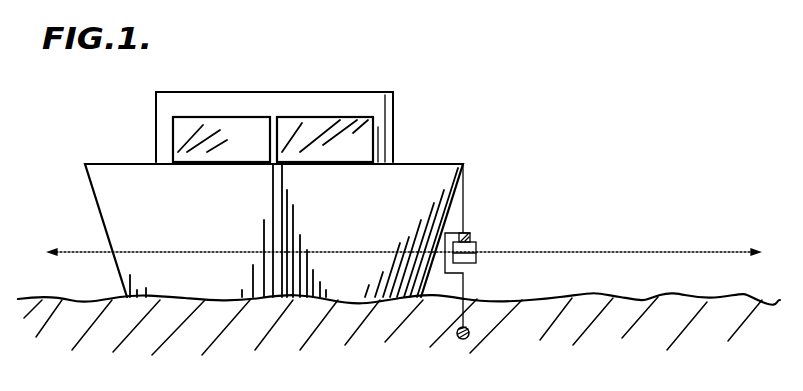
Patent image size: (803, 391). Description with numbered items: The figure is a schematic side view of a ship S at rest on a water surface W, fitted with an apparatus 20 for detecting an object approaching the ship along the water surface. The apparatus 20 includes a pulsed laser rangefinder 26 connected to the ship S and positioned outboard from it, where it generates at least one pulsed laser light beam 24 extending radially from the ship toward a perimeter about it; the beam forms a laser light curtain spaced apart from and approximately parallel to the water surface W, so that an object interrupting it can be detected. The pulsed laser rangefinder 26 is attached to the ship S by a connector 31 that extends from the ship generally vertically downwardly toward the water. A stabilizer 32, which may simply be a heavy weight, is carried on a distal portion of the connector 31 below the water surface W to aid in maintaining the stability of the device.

The apparatus 20 is at (480, 237).
The pulsed laser light beam 24 is at (95, 255).
The pulsed laser rangefinder 26 is at (477, 262).
The connector 31 is at (465, 183).
The stabilizer 32 is at (458, 338).
The ship S is at (174, 212).
The water surface W is at (166, 348).